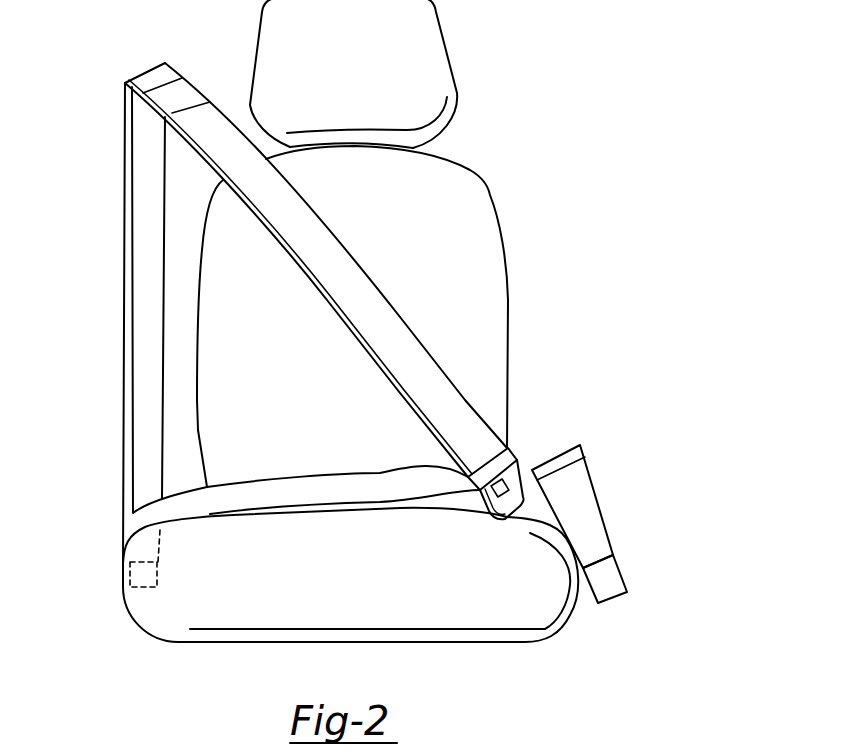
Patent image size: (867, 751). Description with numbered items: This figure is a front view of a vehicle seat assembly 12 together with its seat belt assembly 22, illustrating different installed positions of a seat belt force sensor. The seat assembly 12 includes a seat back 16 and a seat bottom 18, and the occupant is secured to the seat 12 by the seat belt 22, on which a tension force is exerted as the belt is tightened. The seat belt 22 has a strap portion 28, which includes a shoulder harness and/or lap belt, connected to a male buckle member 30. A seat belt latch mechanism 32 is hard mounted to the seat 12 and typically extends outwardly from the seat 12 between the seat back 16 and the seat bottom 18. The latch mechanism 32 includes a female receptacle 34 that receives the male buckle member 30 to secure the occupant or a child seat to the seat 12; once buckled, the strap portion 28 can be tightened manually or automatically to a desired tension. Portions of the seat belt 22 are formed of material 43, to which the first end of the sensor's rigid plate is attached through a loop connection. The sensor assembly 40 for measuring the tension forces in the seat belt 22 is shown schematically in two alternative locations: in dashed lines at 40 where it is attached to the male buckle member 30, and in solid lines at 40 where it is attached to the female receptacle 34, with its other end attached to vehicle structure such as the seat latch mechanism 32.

The vehicle seat assembly 12 is at (490, 60).
The seat back 16 is at (360, 78).
The seat bottom 18 is at (517, 617).
The seat belt assembly 22 is at (96, 280).
The strap portion 28 is at (205, 113).
The male buckle member 30 is at (505, 505).
The seat belt latch mechanism 32 is at (612, 542).
The female receptacle 34 is at (553, 452).
The sensor assembly 40 is at (149, 608).
The material 43 is at (158, 405).